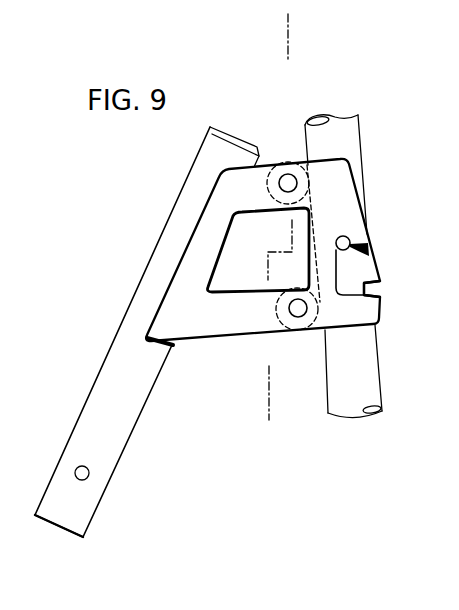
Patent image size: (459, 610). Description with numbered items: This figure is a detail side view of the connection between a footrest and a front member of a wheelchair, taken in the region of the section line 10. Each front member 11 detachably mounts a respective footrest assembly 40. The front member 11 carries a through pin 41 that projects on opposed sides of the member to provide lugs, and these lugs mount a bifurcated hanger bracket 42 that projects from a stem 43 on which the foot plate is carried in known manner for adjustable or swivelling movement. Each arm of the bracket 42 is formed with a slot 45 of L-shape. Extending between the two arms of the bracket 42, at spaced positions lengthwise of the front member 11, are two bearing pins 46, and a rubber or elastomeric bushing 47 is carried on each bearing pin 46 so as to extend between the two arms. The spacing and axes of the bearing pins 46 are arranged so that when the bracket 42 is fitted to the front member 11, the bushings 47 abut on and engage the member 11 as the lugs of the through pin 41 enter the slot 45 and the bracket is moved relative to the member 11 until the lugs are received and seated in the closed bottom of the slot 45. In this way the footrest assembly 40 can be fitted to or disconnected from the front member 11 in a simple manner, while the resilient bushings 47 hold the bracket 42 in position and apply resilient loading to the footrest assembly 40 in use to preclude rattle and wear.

The section line 10' 10 is at (279, 37).
The front member 11 is at (359, 137).
The footrest assembly 40 is at (207, 332).
The through pin 41 is at (350, 240).
The bifurcated hanger bracket 42 is at (198, 332).
The stem 43 is at (127, 323).
The slot 45 is at (381, 285).
The bearing pin 46 is at (285, 190).
The bushing 47 is at (282, 162).